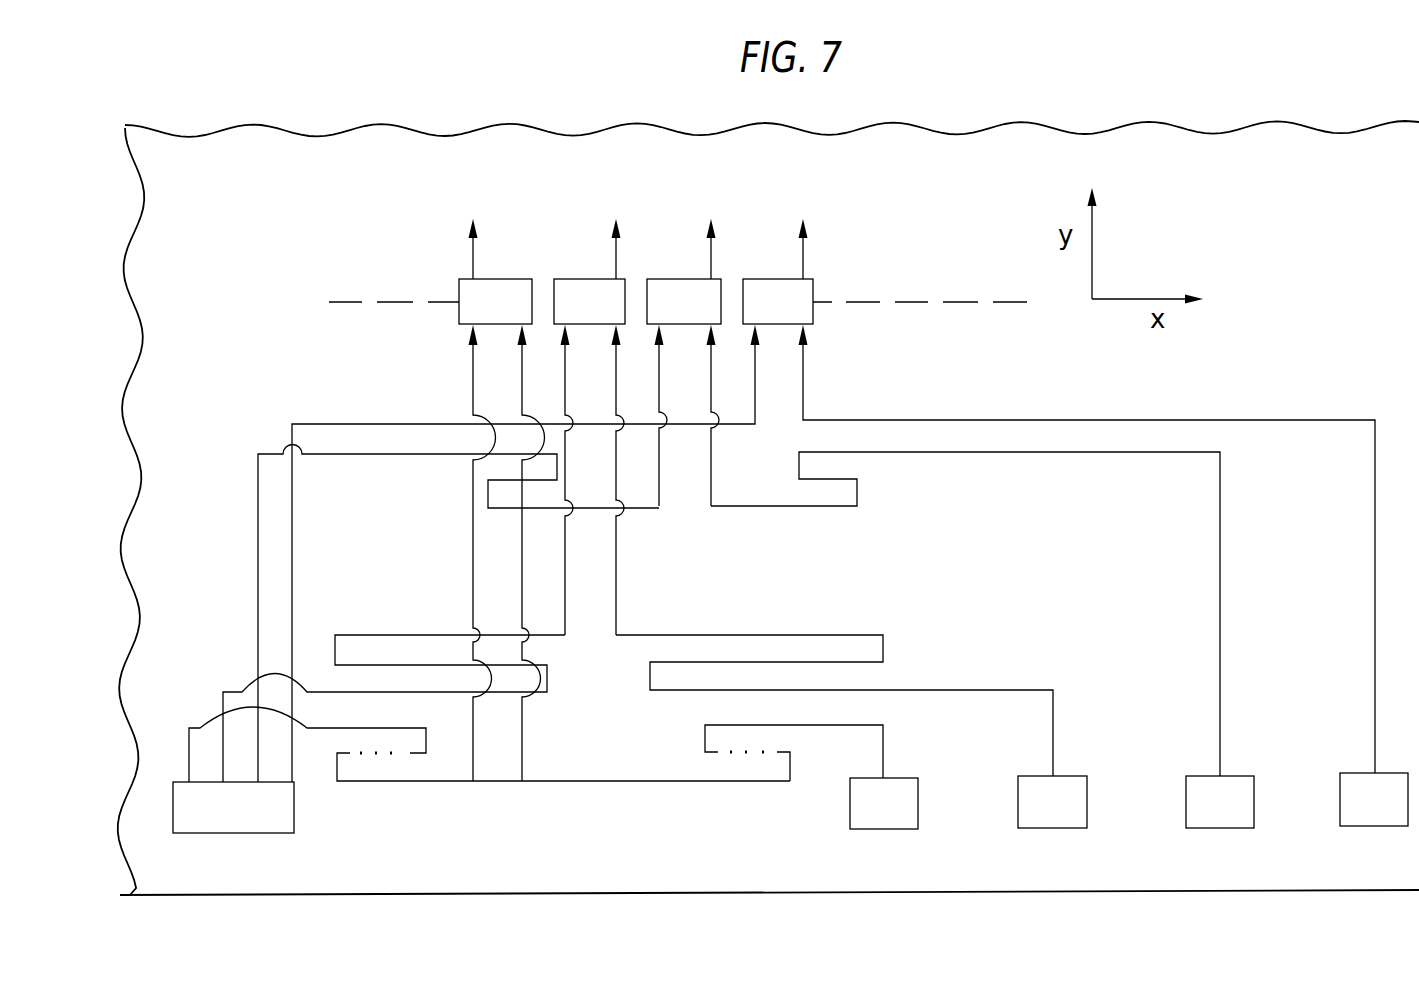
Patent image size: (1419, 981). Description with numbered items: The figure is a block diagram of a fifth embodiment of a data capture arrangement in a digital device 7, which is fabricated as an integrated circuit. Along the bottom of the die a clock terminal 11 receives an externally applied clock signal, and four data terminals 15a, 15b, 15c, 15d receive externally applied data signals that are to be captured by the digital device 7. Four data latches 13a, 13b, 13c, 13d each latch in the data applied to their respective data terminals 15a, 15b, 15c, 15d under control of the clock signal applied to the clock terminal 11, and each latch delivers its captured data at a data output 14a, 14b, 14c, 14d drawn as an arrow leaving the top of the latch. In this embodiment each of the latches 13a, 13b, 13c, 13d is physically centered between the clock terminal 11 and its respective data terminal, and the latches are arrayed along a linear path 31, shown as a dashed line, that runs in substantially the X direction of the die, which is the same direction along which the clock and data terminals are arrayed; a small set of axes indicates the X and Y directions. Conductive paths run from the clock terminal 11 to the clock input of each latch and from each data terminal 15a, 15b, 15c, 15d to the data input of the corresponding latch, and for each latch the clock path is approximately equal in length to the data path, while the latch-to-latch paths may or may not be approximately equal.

The digital device 7 is at (1232, 146).
The linear path 31 is at (350, 301).
The latch 13a is at (495, 279).
The latch 13b is at (562, 280).
The latch 13c is at (657, 280).
The latch 13d is at (752, 280).
The data output 14a is at (471, 262).
The data output 14b is at (614, 262).
The data output 14c is at (709, 262).
The data output 14d is at (801, 262).
The clock terminal 11 is at (294, 832).
The data terminal 15a is at (885, 829).
The data terminal 15b is at (1055, 828).
The data terminal 15c is at (1222, 828).
The data terminal 15d is at (1377, 826).